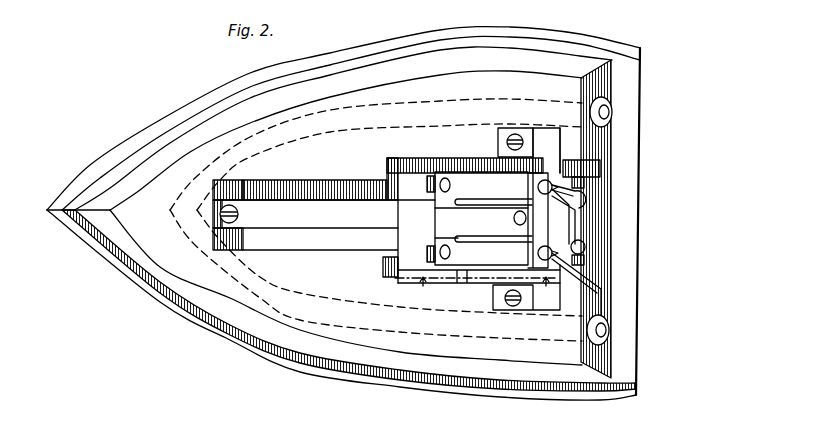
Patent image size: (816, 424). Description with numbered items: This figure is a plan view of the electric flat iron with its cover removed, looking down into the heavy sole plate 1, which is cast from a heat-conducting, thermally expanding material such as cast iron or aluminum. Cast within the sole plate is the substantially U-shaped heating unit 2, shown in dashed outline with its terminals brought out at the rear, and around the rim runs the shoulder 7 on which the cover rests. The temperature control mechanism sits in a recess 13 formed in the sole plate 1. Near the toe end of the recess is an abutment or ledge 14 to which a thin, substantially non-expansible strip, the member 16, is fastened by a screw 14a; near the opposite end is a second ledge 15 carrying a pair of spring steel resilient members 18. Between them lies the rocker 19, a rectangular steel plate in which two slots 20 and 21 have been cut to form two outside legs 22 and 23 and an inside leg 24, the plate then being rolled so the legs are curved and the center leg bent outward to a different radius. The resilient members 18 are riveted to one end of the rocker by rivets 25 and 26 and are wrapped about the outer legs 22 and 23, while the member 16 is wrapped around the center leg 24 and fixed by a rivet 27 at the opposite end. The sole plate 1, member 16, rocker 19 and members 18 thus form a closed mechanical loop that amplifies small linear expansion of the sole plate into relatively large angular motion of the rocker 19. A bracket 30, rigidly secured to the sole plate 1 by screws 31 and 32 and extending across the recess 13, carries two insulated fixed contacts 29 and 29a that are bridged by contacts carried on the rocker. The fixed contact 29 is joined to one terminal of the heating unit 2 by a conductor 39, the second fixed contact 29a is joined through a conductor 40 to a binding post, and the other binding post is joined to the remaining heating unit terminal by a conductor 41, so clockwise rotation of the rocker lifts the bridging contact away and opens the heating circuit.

The sole plate 1 is at (329, 382).
The heating unit 2 is at (436, 106).
The shoulder 7 is at (163, 138).
The recess 13 is at (328, 186).
The abutment or ledge 14 is at (251, 192).
The screw 14a is at (239, 214).
The second abutment or ledge 15 is at (473, 280).
The non-expansible member 16 is at (330, 236).
The resilient members 18 is at (428, 188).
The rocker 19 is at (433, 218).
The slot 20 is at (457, 199).
The slot 21 is at (493, 241).
The outside leg 22 is at (467, 187).
The outside leg 23 is at (453, 266).
The inside leg 24 is at (493, 212).
The rivet 25 is at (445, 178).
The rivet 26 is at (440, 255).
The rivet 27 is at (519, 211).
The fixed contact 29 is at (545, 246).
The second fixed contact 29a is at (565, 162).
The bracket 30 is at (540, 131).
The screw 31 is at (515, 133).
The screw 32 is at (513, 306).
The conductor 39 is at (604, 297).
The conductor 40 is at (578, 228).
The conductor 41 is at (588, 196).